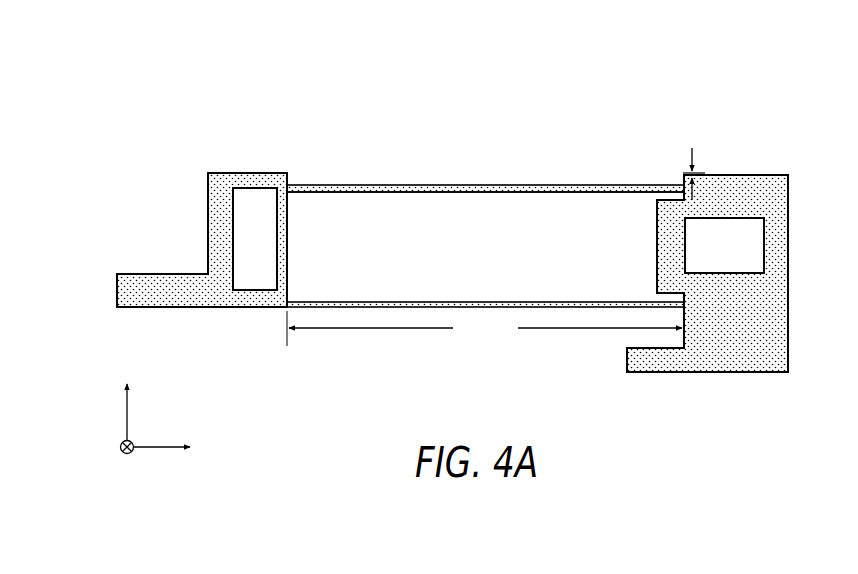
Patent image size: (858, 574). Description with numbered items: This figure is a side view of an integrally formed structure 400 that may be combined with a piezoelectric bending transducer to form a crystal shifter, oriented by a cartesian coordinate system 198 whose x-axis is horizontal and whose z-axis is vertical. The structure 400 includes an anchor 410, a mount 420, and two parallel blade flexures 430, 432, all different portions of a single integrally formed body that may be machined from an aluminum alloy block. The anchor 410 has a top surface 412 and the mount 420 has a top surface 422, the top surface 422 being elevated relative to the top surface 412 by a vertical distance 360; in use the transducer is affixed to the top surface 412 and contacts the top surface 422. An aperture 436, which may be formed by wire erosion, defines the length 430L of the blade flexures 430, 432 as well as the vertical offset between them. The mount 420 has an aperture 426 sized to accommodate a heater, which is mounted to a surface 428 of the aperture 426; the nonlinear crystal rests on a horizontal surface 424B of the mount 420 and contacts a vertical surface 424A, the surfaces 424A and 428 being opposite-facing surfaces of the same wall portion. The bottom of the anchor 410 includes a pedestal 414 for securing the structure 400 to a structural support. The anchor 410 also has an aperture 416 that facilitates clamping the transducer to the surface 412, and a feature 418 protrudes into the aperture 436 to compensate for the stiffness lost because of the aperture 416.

The integrally formed structure 400 is at (178, 89).
The anchor 410 is at (770, 174).
The top surface of anchor 412 is at (720, 172).
The pedestal 414 is at (626, 360).
The aperture of anchor 416 is at (748, 252).
The feature 418 is at (656, 240).
The mount 420 is at (235, 172).
The top surface of mount 422 is at (268, 171).
The vertical surface of mount 424A is at (206, 236).
The horizontal surface of mount 424B is at (162, 271).
The aperture of mount 426 is at (255, 283).
The surface of aperture 428 is at (236, 241).
The blade flexure 430 is at (462, 301).
The length of blade flexures 430L is at (484, 328).
The blade flexure 432 is at (462, 193).
The aperture 436 is at (575, 202).
The vertical distance 360 is at (694, 163).
The cartesian coordinate system 198 is at (111, 398).